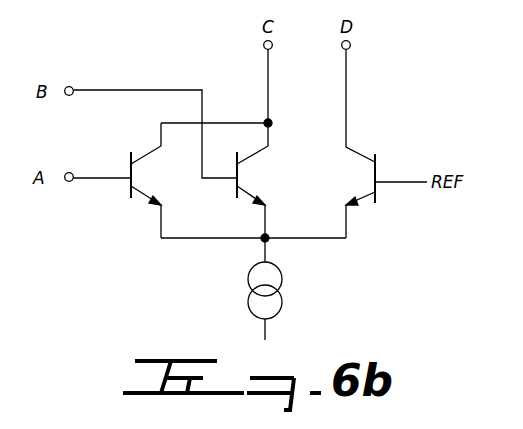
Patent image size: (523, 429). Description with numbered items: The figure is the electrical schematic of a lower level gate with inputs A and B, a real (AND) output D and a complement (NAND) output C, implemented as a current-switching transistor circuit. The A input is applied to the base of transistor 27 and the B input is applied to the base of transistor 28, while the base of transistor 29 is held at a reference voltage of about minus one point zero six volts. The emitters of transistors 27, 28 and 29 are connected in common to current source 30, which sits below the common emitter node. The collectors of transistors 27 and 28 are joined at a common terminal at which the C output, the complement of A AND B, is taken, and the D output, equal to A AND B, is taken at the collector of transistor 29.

The transistor 27 is at (138, 183).
The transistor 28 is at (244, 183).
The transistor 29 is at (366, 186).
The current source 30 is at (283, 292).